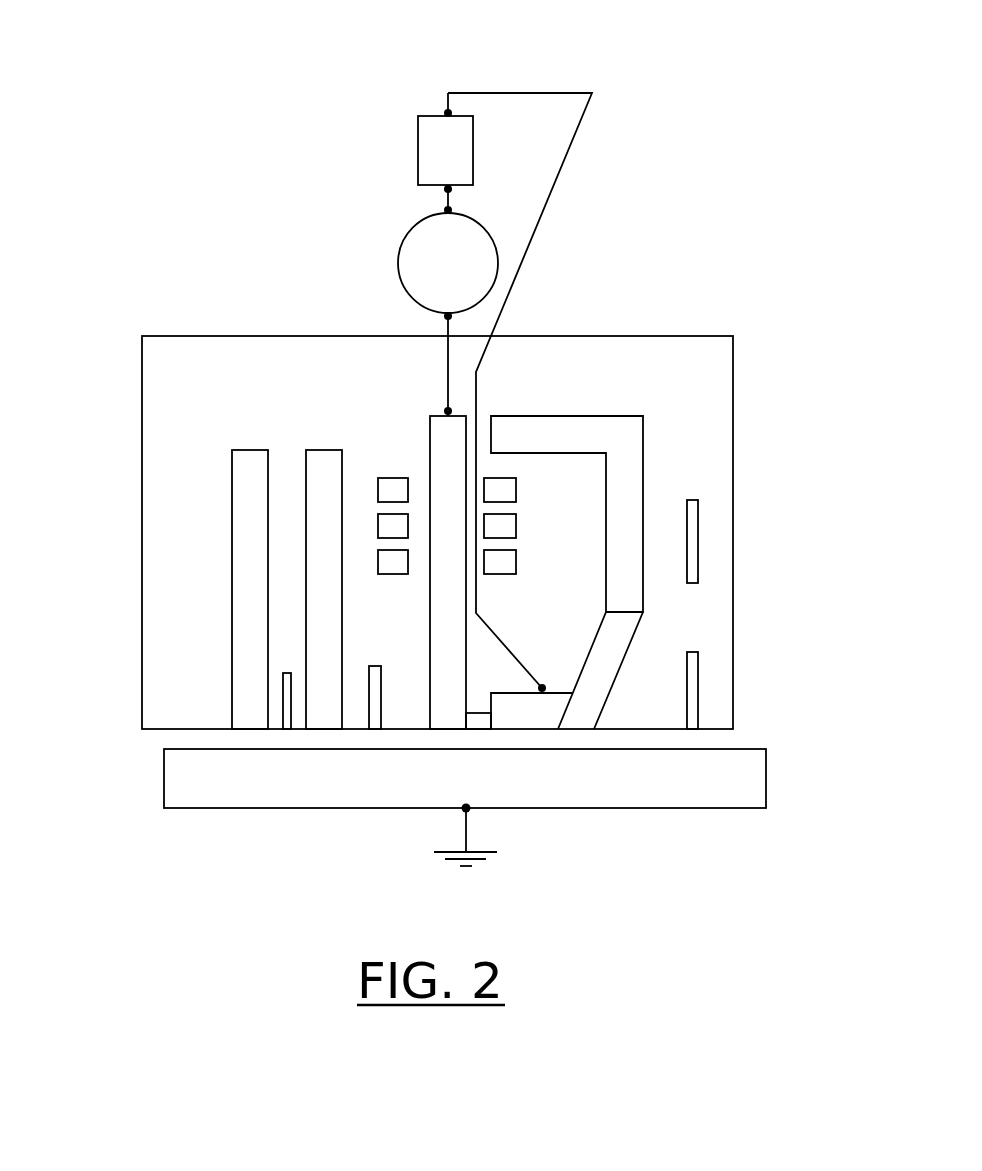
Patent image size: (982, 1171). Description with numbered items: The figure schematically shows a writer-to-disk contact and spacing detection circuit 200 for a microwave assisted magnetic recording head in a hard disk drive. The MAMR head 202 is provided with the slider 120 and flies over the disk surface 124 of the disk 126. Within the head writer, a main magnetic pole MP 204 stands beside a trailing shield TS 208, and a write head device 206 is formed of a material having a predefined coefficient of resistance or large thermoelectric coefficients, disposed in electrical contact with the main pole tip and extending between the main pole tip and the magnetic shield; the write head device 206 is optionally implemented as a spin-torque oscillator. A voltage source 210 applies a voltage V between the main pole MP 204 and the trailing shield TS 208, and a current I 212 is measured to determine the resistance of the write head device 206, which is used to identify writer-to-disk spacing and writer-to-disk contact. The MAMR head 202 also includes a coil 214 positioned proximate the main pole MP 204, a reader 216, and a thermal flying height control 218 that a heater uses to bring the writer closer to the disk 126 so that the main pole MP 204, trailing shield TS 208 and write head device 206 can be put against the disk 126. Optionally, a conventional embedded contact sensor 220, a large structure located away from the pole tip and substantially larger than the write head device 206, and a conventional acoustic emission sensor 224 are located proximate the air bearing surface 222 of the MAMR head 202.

The writer-to-disk contact and spacing detection circuit 200 is at (468, 69).
The voltage source 210 is at (428, 172).
The current I 212 is at (430, 286).
The slider 120 is at (715, 362).
The MAMR head 202 is at (242, 394).
The reader 216 is at (281, 441).
The coil 214 is at (388, 461).
The embedded contact sensor 220 is at (376, 665).
The main magnetic pole 204 is at (448, 572).
The write head device 206 is at (477, 720).
The trailing shield pole 208 is at (528, 713).
The thermal flying height control 218 is at (697, 498).
The acoustic emission sensor 224 is at (697, 650).
The air bearing surface 222 is at (725, 729).
The disk surface 124 is at (197, 751).
The disk 126 is at (752, 784).